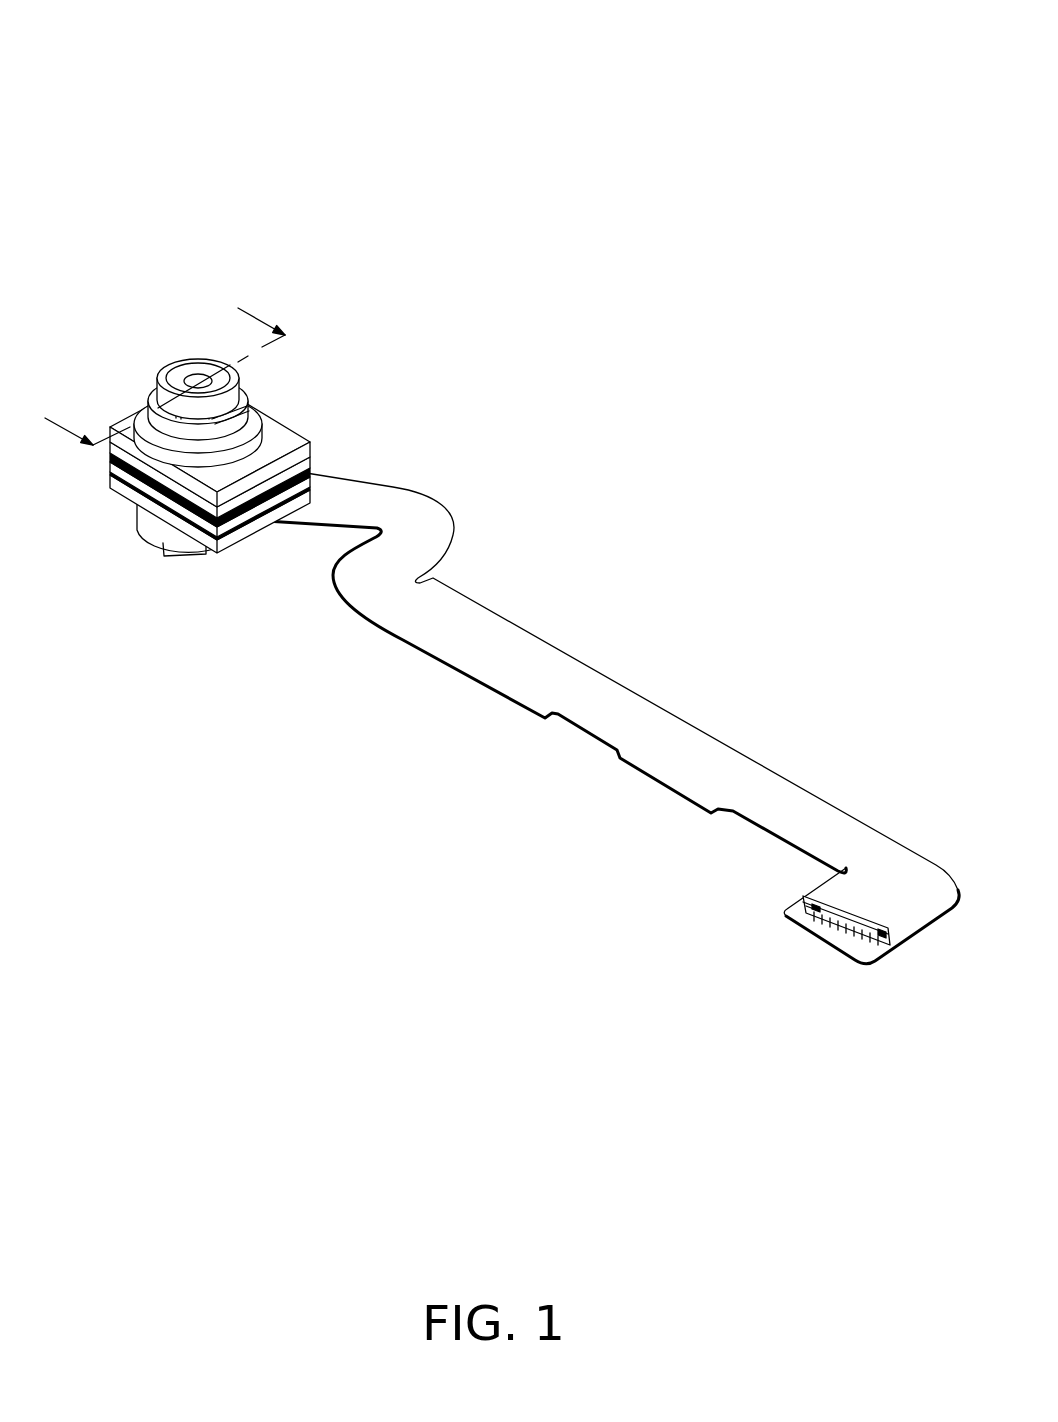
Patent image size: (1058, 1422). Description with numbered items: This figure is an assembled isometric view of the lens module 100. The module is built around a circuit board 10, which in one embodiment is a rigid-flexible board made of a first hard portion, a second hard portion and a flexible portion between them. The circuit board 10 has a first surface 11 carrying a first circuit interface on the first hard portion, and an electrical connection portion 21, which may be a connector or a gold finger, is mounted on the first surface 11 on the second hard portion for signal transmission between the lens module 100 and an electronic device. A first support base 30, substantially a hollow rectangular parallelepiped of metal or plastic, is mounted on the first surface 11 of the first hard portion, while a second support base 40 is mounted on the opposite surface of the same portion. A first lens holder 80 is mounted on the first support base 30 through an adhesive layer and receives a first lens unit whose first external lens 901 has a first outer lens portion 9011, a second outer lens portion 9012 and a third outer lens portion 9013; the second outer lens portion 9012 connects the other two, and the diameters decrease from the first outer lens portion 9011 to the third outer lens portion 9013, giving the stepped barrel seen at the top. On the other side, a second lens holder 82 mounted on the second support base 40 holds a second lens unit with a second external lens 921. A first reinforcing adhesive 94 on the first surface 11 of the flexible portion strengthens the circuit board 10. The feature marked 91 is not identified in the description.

The lens module 100 is at (525, 48).
The circuit board 10 is at (707, 758).
The first surface 11 is at (807, 817).
The electrical connection portion 21 is at (892, 933).
The first support base 30 is at (236, 489).
The second support base 40 is at (127, 475).
The first lens holder 80 is at (140, 425).
The second lens holder 82 is at (168, 518).
The lens 91 is at (191, 377).
The first reinforcing adhesive 94 is at (300, 483).
The first external lens 901 is at (293, 413).
The first outer lens portion 9011 is at (183, 458).
The second outer lens portion 9012 is at (196, 432).
The third outer lens portion 9013 is at (180, 395).
The second external lens 921 is at (187, 545).